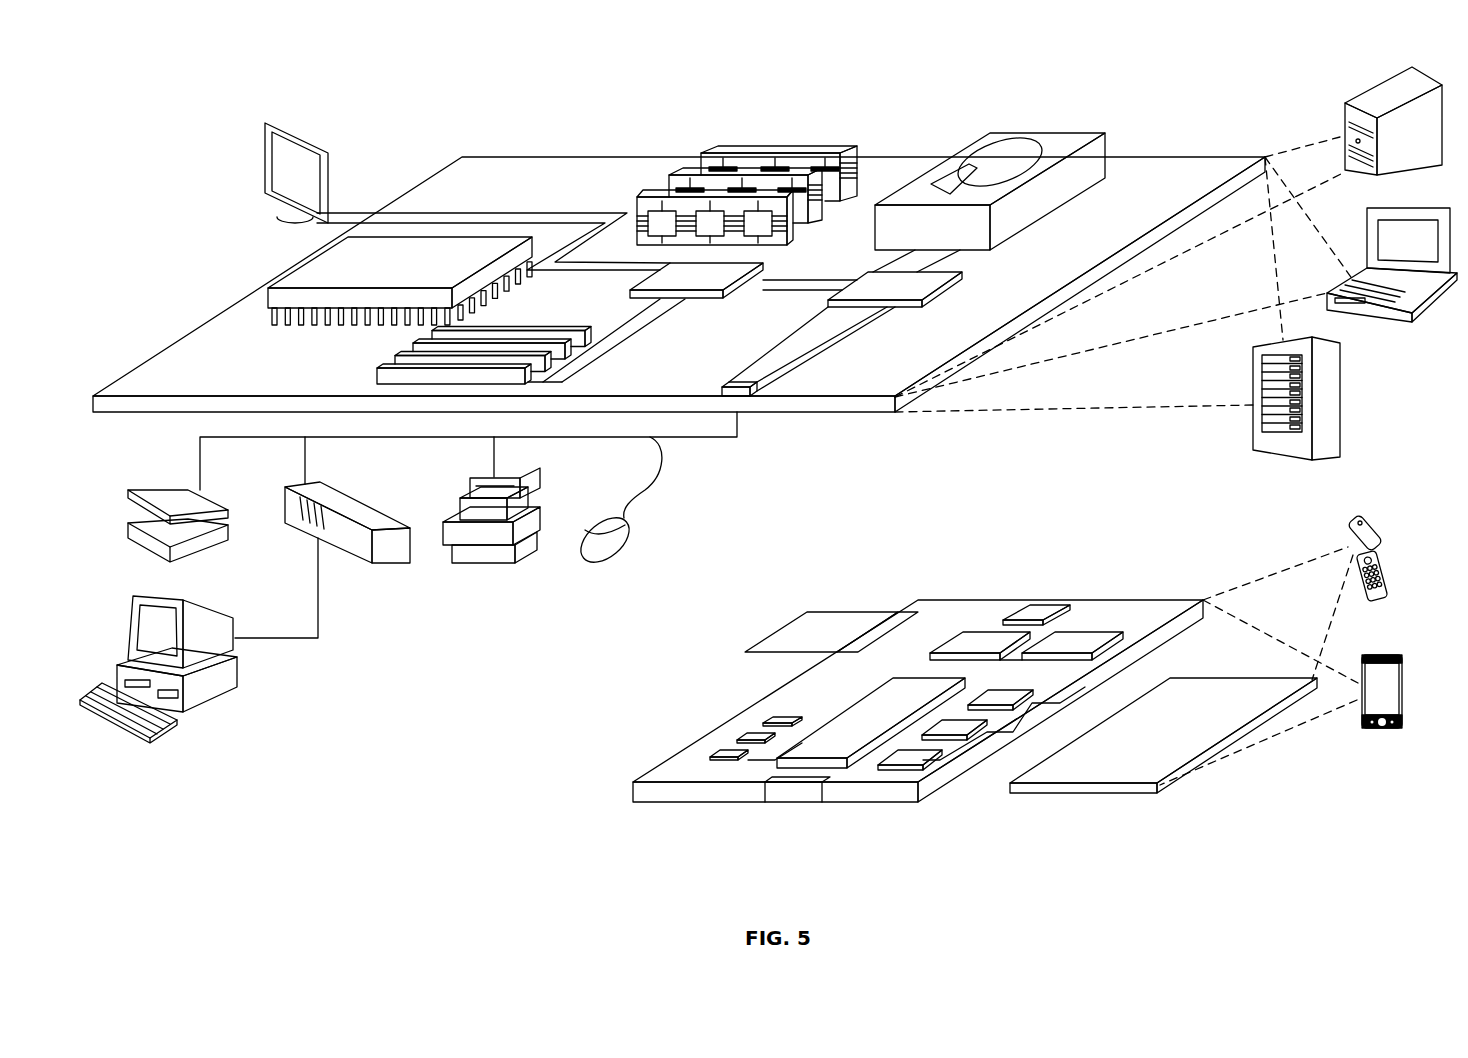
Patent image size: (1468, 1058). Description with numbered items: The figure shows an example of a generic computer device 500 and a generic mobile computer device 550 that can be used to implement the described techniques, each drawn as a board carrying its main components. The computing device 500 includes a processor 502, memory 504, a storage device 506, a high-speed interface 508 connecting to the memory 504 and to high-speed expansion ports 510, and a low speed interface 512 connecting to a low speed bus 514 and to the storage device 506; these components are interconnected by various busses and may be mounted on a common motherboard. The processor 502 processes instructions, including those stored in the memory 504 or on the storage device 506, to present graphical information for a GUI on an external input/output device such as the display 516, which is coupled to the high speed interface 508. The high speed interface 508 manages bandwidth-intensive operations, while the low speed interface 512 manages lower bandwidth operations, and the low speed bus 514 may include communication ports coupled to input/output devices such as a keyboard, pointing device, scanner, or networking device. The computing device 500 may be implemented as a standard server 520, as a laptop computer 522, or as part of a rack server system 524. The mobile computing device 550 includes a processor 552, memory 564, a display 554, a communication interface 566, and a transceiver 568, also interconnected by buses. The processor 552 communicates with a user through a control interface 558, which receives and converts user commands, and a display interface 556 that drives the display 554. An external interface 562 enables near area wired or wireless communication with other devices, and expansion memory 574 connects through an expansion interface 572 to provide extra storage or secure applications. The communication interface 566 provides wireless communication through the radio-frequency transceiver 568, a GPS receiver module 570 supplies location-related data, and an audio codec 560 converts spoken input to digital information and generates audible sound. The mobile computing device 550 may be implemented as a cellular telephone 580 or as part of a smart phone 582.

The computing device 500 is at (716, 440).
The processor 502 is at (293, 270).
The memory 504 is at (782, 150).
The storage device 506 is at (1035, 130).
The high-speed interface 508 is at (709, 273).
The high-speed expansion ports 510 is at (405, 357).
The low speed interface 512 is at (867, 283).
The low speed bus 514 is at (742, 378).
The display 516 is at (268, 120).
The standard server 520 is at (1370, 100).
The laptop computer 522 is at (1428, 205).
The rack server system 524 is at (1342, 398).
The mobile computing device 550 is at (588, 812).
The processor 552 is at (838, 730).
The display 554 is at (1205, 692).
The display interface 556 is at (920, 757).
The control interface 558 is at (963, 728).
The audio codec 560 is at (1005, 695).
The external interface 562 is at (793, 783).
The memory 564 is at (735, 738).
The communication interface 566 is at (980, 635).
The transceiver 568 is at (1080, 635).
The GPS receiver module 570 is at (1035, 610).
The expansion interface 572 is at (898, 612).
The expansion memory 574 is at (806, 612).
The cellular telephone 580 is at (1362, 518).
The smart phone 582 is at (1373, 655).